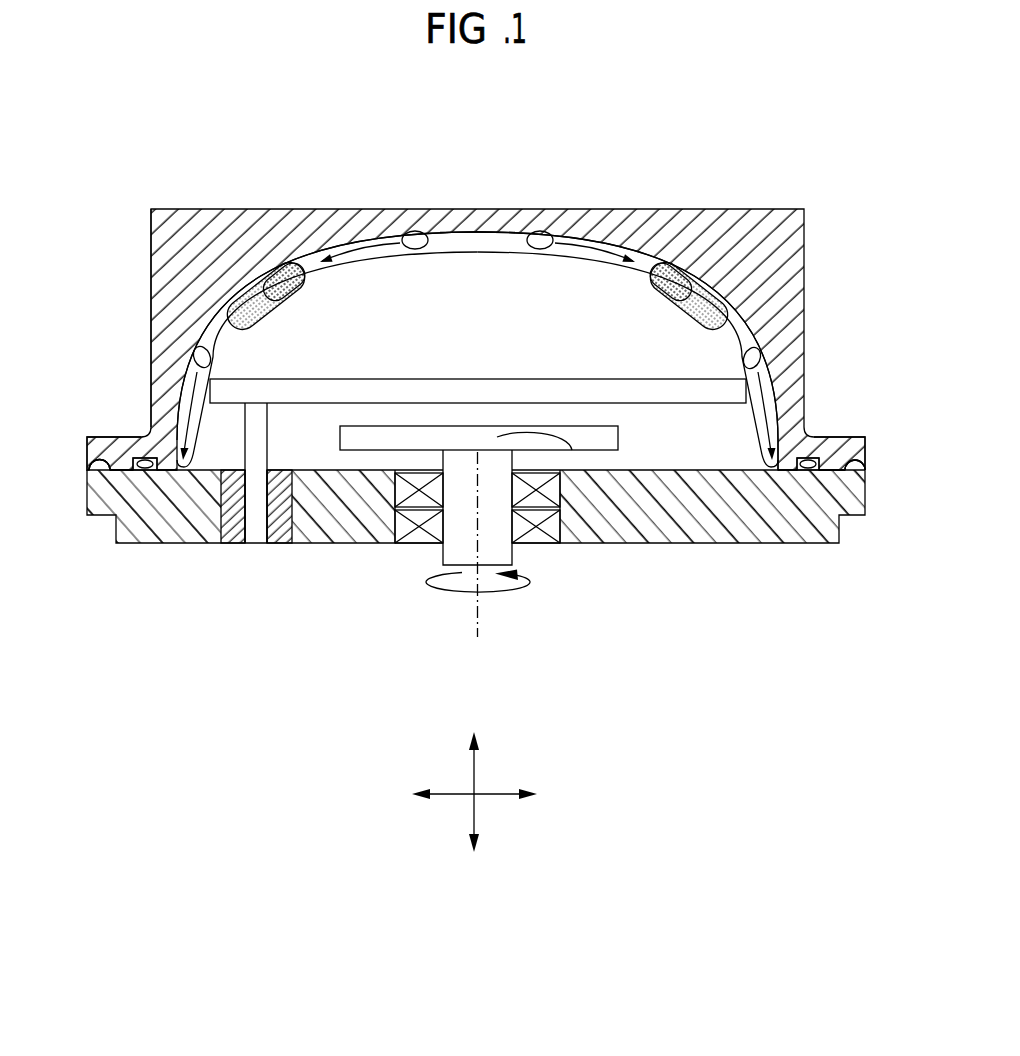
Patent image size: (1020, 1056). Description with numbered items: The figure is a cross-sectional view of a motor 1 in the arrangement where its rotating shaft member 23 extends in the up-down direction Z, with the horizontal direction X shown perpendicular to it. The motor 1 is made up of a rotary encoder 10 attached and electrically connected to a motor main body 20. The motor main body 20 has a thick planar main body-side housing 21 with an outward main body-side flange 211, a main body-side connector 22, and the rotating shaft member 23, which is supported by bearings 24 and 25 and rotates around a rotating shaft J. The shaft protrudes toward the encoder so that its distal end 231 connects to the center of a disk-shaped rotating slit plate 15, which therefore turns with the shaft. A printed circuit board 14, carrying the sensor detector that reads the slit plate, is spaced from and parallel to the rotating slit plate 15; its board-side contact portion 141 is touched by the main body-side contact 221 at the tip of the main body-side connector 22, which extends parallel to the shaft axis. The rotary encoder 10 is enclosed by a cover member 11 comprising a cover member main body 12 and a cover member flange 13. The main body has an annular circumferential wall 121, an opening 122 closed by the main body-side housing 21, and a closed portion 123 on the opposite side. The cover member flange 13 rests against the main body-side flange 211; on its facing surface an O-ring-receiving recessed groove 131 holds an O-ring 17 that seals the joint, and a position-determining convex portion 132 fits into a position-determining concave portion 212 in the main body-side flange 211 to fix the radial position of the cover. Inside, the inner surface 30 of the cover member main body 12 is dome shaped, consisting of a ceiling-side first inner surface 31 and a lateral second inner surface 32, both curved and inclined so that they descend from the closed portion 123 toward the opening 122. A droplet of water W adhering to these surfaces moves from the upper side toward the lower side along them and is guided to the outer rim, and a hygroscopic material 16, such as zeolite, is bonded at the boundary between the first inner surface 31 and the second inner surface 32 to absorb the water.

The motor 1 is at (832, 138).
The rotary encoder 10 is at (818, 263).
The cover member 11 is at (62, 320).
The cover member main body 12 is at (150, 312).
The cover member flange 13 is at (113, 437).
The circumferential wall 121 is at (179, 360).
The opening 122 is at (780, 472).
The closed portion 123 is at (472, 230).
The O-ring-receiving recessed groove 131 is at (131, 472).
The position-determining convex portion 132 is at (122, 476).
The printed circuit board 14 is at (690, 406).
The board-side contact portion 141 is at (260, 394).
The rotating slit plate 15 is at (620, 442).
The hygroscopic material 16 is at (284, 281).
The O-ring 17 is at (158, 464).
The motor main body 20 is at (817, 563).
The main body-side housing 21 is at (607, 520).
The main body-side flange 211 is at (86, 500).
The position-determining concave portion 212 is at (92, 466).
The main body-side connector 22 is at (236, 520).
The main body-side contact 221 is at (268, 395).
The rotating shaft member 23 is at (443, 551).
The distal end 231 is at (572, 450).
The bearing 24 is at (392, 490).
The bearing 25 is at (393, 520).
The inner surface 30 is at (477, 312).
The first inner surface 31 is at (560, 252).
The second inner surface 32 is at (477, 264).
The droplet of water W is at (203, 345).
The rotating shaft J is at (480, 630).
The up-down direction Z is at (518, 745).
The horizontal direction X is at (497, 797).